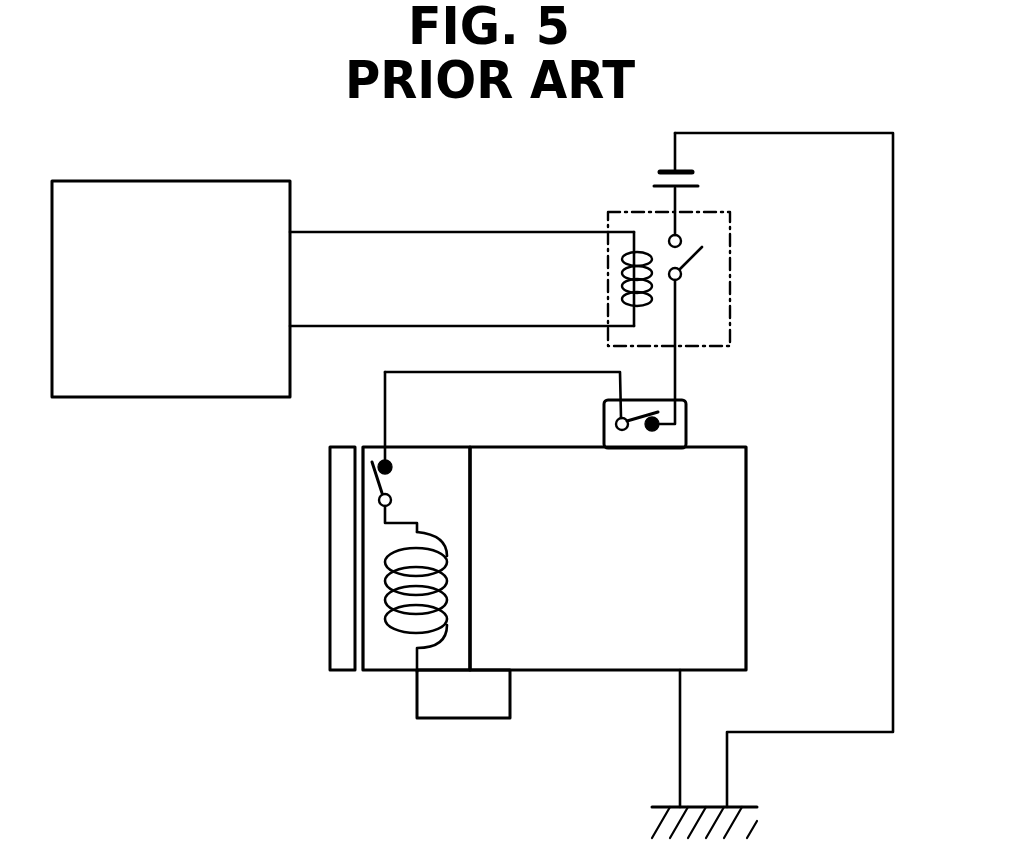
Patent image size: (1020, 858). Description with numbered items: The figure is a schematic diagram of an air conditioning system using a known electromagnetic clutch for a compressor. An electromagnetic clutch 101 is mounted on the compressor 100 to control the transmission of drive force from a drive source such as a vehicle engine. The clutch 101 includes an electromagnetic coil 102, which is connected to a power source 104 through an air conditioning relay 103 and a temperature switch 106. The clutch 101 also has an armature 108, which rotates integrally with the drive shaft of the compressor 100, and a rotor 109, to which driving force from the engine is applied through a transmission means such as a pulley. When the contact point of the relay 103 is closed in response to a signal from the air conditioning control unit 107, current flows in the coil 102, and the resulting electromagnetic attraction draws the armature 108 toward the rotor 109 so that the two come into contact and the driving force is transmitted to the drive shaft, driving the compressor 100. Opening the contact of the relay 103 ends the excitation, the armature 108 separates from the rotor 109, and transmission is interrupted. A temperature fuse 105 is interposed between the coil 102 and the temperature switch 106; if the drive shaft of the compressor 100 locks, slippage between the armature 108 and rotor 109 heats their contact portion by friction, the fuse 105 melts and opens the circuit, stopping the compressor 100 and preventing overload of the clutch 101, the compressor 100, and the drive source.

The compressor 100 is at (717, 538).
The electromagnetic clutch 101 is at (377, 682).
The electromagnetic coil 102 is at (448, 578).
The air conditioning relay 103 is at (608, 283).
The power source 104 is at (657, 180).
The temperature fuse 105 is at (372, 498).
The temperature switch 106 is at (686, 414).
The air conditioning control unit 107 is at (165, 390).
The armature 108 is at (335, 580).
The rotor 109 is at (393, 675).